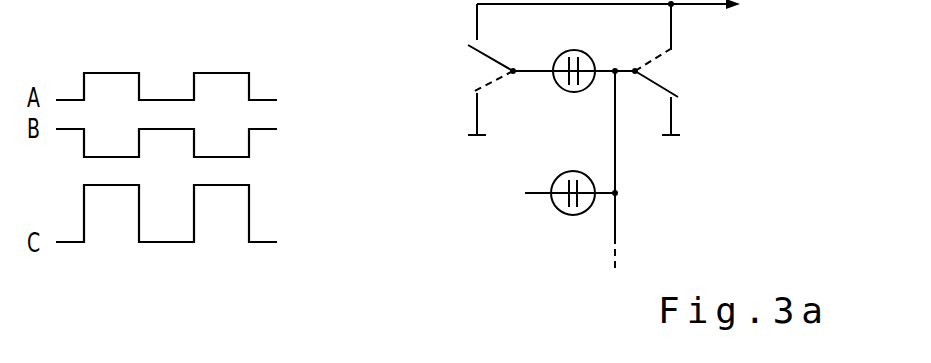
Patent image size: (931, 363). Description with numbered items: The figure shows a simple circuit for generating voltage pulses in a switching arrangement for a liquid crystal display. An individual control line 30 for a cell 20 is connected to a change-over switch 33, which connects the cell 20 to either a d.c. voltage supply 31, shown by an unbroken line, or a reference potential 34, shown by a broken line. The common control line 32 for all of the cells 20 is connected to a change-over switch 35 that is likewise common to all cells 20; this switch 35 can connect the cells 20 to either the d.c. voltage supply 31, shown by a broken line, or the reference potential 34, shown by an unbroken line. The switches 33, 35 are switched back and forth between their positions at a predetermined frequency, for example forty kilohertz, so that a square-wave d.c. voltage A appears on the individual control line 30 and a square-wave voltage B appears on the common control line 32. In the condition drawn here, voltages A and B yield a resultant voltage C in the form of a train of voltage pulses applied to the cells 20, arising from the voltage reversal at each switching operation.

The cell 20 is at (588, 62).
The individual control line 30 is at (533, 72).
The d.c. voltage supply 31 is at (741, 8).
The common control line 32 is at (623, 72).
The change-over switch 33 is at (478, 66).
The reference potential 34 is at (470, 138).
The change-over switch 35 is at (670, 68).